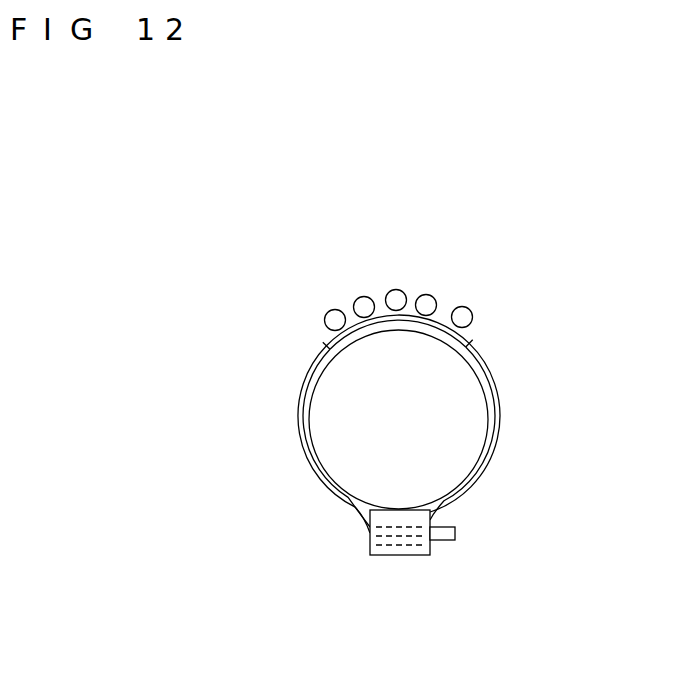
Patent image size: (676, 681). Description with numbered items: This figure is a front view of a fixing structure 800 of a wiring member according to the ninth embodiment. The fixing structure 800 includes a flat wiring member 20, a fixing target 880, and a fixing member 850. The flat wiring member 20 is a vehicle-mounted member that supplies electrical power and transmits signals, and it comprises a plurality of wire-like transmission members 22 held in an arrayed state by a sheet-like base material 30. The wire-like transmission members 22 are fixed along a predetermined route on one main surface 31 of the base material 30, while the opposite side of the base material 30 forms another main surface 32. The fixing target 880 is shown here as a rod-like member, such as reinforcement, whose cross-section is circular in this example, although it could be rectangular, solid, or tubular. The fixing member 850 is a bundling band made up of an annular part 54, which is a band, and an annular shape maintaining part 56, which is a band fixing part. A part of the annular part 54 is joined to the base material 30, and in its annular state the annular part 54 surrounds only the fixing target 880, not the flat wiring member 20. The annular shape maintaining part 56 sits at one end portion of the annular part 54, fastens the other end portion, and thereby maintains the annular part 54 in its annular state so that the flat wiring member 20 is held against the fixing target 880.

The fixing structure 800 is at (266, 198).
The flat wiring member 20 is at (413, 261).
The wire-like transmission members 22 is at (421, 296).
The base material 30 is at (457, 280).
The main surface 31 is at (349, 318).
The main surface 32 is at (322, 358).
The fixing target 880 is at (456, 470).
The annular part 54 is at (354, 531).
The annular shape maintaining part 56 is at (414, 567).
The fixing member 850 is at (390, 576).